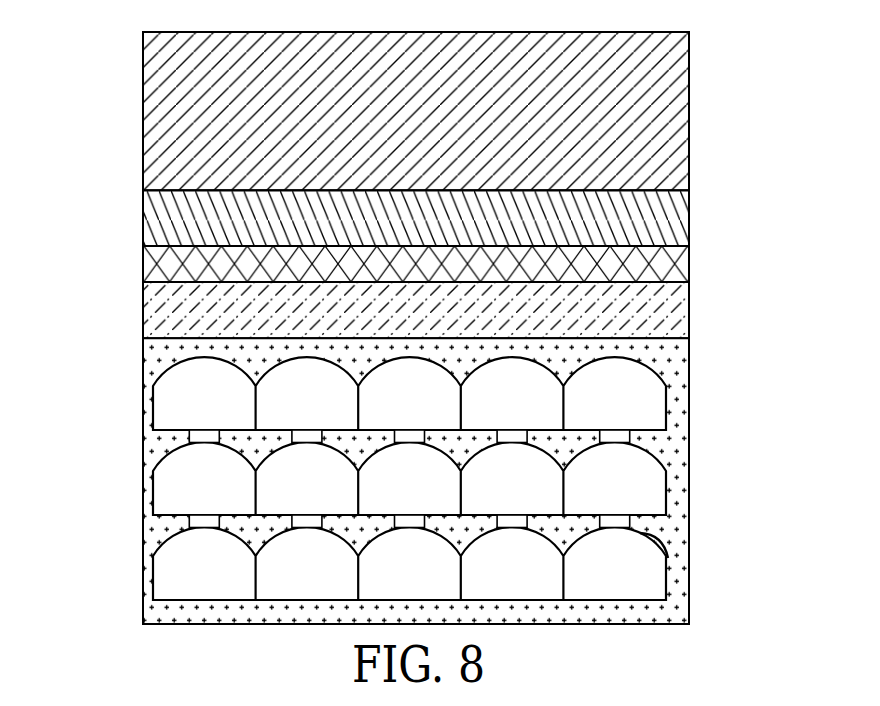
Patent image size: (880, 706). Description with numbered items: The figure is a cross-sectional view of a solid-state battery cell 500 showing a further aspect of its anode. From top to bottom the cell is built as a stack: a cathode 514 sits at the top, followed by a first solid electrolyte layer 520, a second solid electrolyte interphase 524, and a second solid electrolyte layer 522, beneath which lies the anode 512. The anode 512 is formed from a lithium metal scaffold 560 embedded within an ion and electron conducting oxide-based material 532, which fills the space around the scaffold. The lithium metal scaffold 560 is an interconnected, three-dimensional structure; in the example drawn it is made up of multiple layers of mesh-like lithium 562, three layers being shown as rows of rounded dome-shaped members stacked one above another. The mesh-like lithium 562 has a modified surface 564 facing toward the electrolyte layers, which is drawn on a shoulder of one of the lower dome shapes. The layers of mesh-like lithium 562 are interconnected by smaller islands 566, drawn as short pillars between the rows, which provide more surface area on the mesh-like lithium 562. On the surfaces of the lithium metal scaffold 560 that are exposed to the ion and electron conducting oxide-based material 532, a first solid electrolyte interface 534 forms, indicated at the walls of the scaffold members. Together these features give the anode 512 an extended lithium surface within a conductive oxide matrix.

The solid-state battery cell 500 is at (390, 313).
The cathode 514 is at (689, 115).
The first solid electrolyte layer 520 is at (689, 218).
The second solid electrolyte interphase 524 is at (689, 265).
The second solid electrolyte layer 522 is at (689, 317).
The anode 512 is at (426, 482).
The lithium metal scaffold 560 is at (181, 391).
The mesh-like lithium 562 is at (617, 390).
The smaller islands 566 is at (615, 439).
The first solid electrolyte interface 534 is at (190, 436).
The modified surface 564 is at (668, 558).
The ion and electron conducting oxide-based material 532 is at (675, 613).